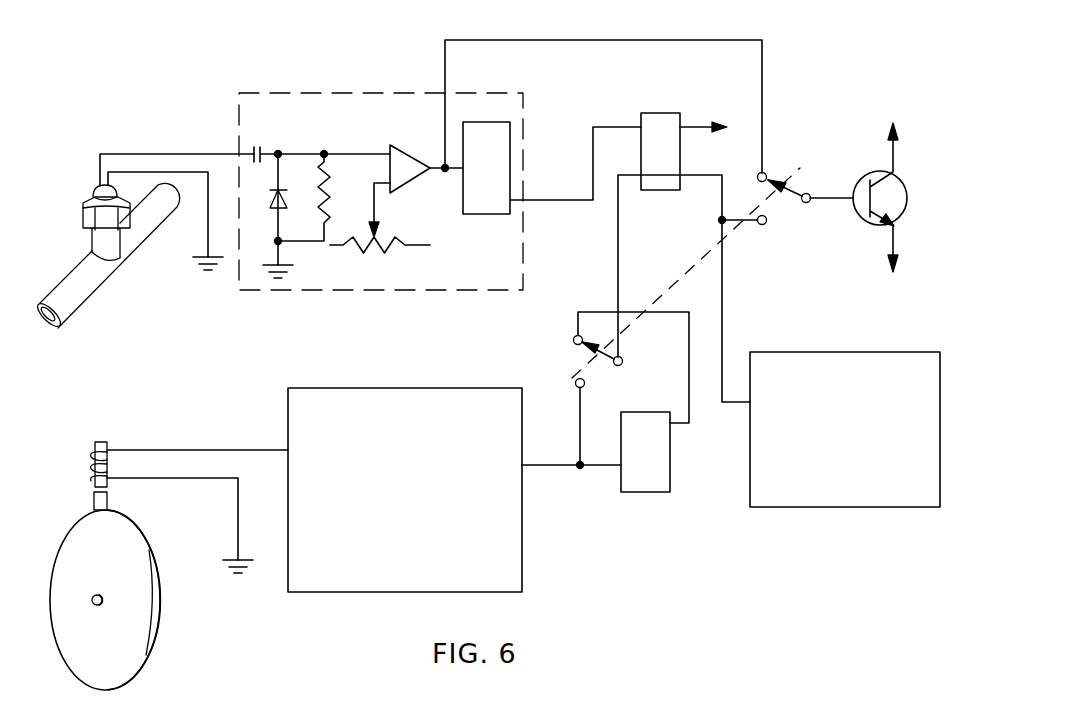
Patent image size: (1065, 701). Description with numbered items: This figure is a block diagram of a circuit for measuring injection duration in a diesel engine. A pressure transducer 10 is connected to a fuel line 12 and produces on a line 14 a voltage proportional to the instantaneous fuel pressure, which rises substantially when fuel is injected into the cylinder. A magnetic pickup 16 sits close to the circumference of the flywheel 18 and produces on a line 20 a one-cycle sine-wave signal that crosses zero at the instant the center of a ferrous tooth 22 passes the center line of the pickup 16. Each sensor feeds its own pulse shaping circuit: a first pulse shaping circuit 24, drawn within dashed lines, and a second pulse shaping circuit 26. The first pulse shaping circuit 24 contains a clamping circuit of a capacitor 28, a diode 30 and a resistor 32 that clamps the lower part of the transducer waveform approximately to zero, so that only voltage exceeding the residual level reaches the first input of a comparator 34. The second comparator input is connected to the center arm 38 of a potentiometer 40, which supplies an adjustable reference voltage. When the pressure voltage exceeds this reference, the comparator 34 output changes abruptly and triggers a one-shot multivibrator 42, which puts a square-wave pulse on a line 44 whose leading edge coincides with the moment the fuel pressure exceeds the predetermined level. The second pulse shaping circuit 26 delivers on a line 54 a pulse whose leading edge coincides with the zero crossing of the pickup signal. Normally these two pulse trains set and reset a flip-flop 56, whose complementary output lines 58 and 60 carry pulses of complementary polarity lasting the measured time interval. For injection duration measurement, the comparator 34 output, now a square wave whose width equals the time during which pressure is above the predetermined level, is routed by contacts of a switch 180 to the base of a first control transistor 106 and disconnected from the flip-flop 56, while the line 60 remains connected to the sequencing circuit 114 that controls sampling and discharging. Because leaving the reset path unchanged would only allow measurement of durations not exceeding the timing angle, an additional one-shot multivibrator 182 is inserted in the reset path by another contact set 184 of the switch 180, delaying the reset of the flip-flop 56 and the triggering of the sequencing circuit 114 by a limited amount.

The pressure transducer 10 is at (96, 188).
The fuel line 12 is at (70, 271).
The line 14 is at (170, 153).
The magnetic pickup 16 is at (100, 440).
The flywheel 18 is at (140, 625).
The line 20 is at (218, 448).
The ferrous tooth 22 is at (110, 503).
The first pulse shaping circuit 24 is at (340, 93).
The second pulse shaping circuit 26 is at (375, 388).
The capacitor 28 is at (257, 145).
The diode 30 is at (272, 200).
The resistor 32 is at (331, 189).
The comparator 34 is at (400, 152).
The center arm 38 is at (378, 233).
The potentiometer 40 is at (372, 251).
The one-shot multivibrator 42 is at (512, 128).
The line 44 is at (548, 198).
The line 54 is at (547, 468).
The flip-flop 56 is at (668, 112).
The complementary output line 58 is at (700, 125).
The complementary output line 60 is at (718, 200).
The first control transistor 106 is at (905, 190).
The sequencing circuit 114 is at (818, 352).
The switch 180 is at (806, 180).
The additional one-shot multivibrator 182 is at (670, 482).
The contact set 184 is at (573, 356).